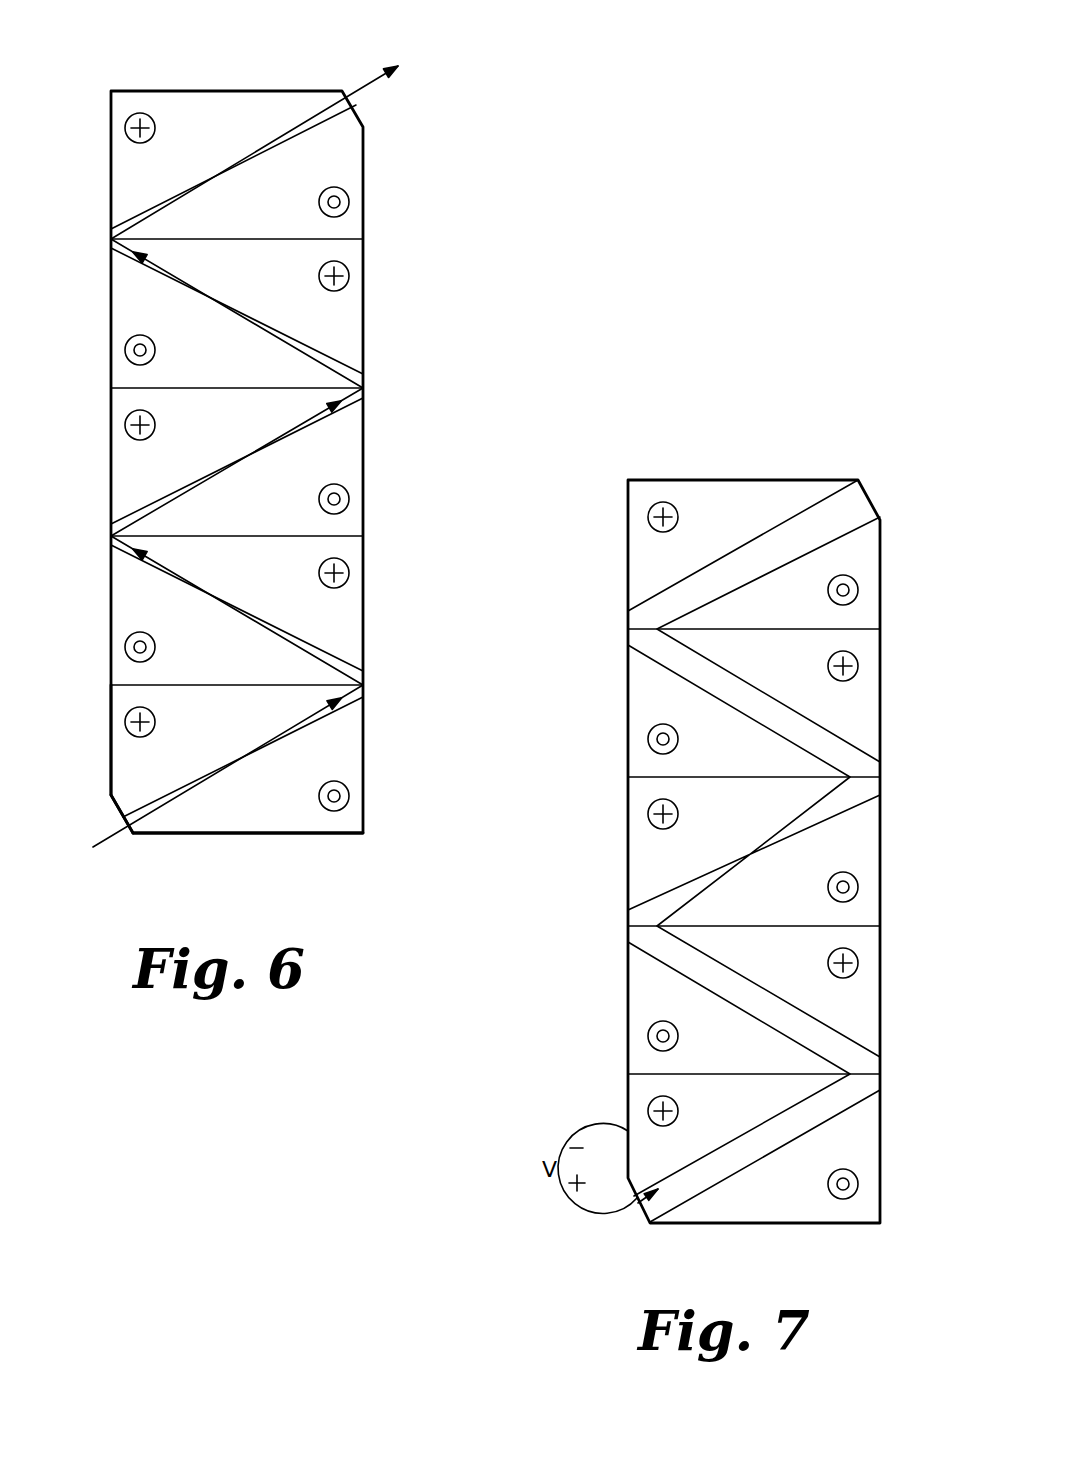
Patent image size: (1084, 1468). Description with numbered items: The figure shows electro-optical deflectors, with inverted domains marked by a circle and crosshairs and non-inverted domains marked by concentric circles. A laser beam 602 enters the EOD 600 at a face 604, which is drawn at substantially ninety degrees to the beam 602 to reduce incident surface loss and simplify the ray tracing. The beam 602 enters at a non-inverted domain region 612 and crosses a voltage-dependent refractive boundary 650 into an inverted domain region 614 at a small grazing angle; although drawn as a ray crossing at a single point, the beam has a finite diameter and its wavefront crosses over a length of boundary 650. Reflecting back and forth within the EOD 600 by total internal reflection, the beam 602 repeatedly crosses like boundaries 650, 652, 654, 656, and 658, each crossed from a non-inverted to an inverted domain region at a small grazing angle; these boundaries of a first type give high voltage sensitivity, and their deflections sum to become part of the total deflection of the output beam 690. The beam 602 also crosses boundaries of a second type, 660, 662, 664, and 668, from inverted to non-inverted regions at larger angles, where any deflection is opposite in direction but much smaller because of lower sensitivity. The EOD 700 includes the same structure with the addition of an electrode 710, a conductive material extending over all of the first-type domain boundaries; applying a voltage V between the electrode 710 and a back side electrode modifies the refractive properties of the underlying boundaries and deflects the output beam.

In FIG. 6, the EOD 600 is at (400, 198).
In FIG. 6, the laser beam 602 is at (107, 840).
In FIG. 6, the face 604 is at (118, 806).
In FIG. 6, the non-inverted domain region 612 is at (260, 820).
In FIG. 6, the inverted domain region 614 is at (127, 767).
In FIG. 6, the voltage-dependent refractive boundary 650 is at (325, 715).
In FIG. 6, the voltage-dependent refractive boundary 652 is at (158, 570).
In FIG. 6, the voltage-dependent refractive boundary 654 is at (322, 422).
In FIG. 6, the voltage-dependent refractive boundary 656 is at (148, 270).
In FIG. 6, the voltage-dependent refractive boundary 658 is at (323, 128).
In FIG. 6, the voltage-dependent refractive boundary 660 is at (267, 685).
In FIG. 6, the voltage-dependent refractive boundary 662 is at (265, 535).
In FIG. 6, the voltage-dependent refractive boundary 664 is at (248, 387).
In FIG. 6, the voltage-dependent refractive boundary 668 is at (247, 238).
In FIG. 6, the output beam 690 is at (371, 80).
In FIG. 7, the EOD 700 is at (853, 449).
In FIG. 7, the electrode 710 is at (860, 777).